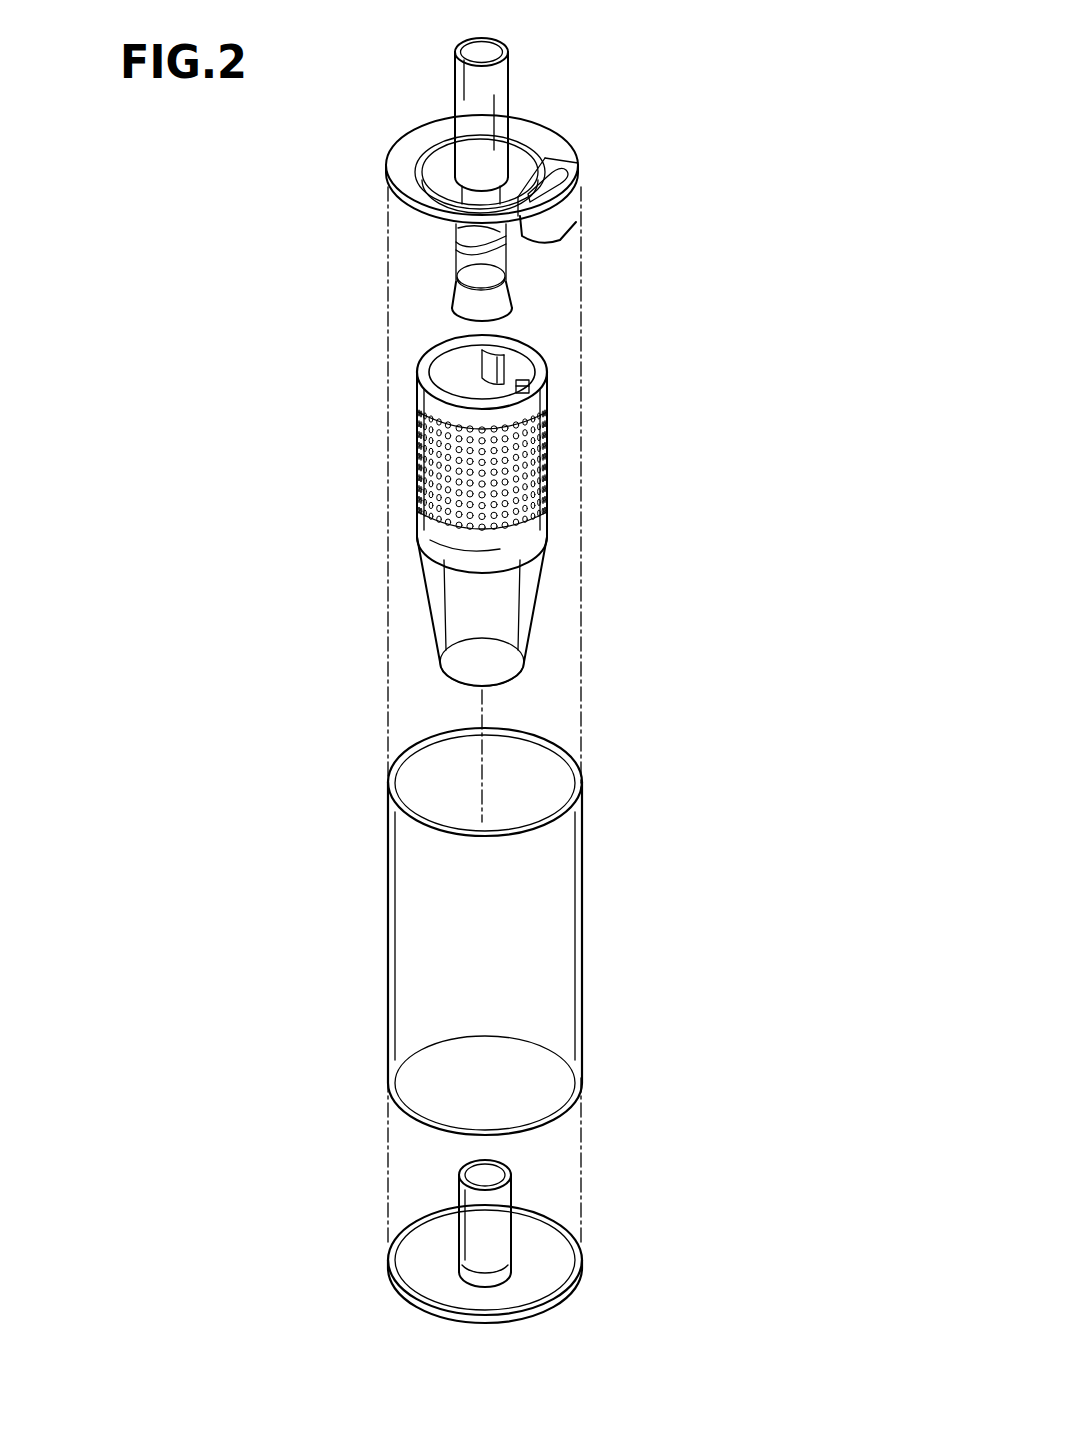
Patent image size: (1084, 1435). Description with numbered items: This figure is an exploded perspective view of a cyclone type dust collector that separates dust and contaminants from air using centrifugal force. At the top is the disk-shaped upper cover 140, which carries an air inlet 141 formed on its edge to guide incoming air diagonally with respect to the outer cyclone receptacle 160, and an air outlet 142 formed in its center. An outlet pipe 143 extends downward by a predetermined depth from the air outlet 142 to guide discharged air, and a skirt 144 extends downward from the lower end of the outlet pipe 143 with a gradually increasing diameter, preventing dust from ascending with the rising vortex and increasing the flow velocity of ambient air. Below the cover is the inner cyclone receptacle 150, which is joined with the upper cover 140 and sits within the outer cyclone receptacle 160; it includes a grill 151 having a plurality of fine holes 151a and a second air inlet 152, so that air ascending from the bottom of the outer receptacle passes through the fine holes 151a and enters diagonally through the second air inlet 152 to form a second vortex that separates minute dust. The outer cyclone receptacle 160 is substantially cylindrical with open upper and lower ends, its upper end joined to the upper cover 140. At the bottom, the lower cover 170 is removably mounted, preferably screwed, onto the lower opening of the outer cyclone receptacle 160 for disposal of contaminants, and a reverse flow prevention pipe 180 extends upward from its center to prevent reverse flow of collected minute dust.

The upper cover 140 is at (556, 124).
The air inlet 141 is at (573, 181).
The air outlet 142 is at (470, 50).
The outlet pipe 143 is at (462, 245).
The skirt 144 is at (460, 297).
The inner cyclone receptacle 150 is at (474, 510).
The grill 151 is at (407, 479).
The fine holes 151a is at (418, 465).
The second air inlet 152 is at (528, 374).
The outer cyclone receptacle 160 is at (586, 940).
The lower cover 170 is at (586, 1253).
The reverse flow prevention pipe 180 is at (472, 1197).